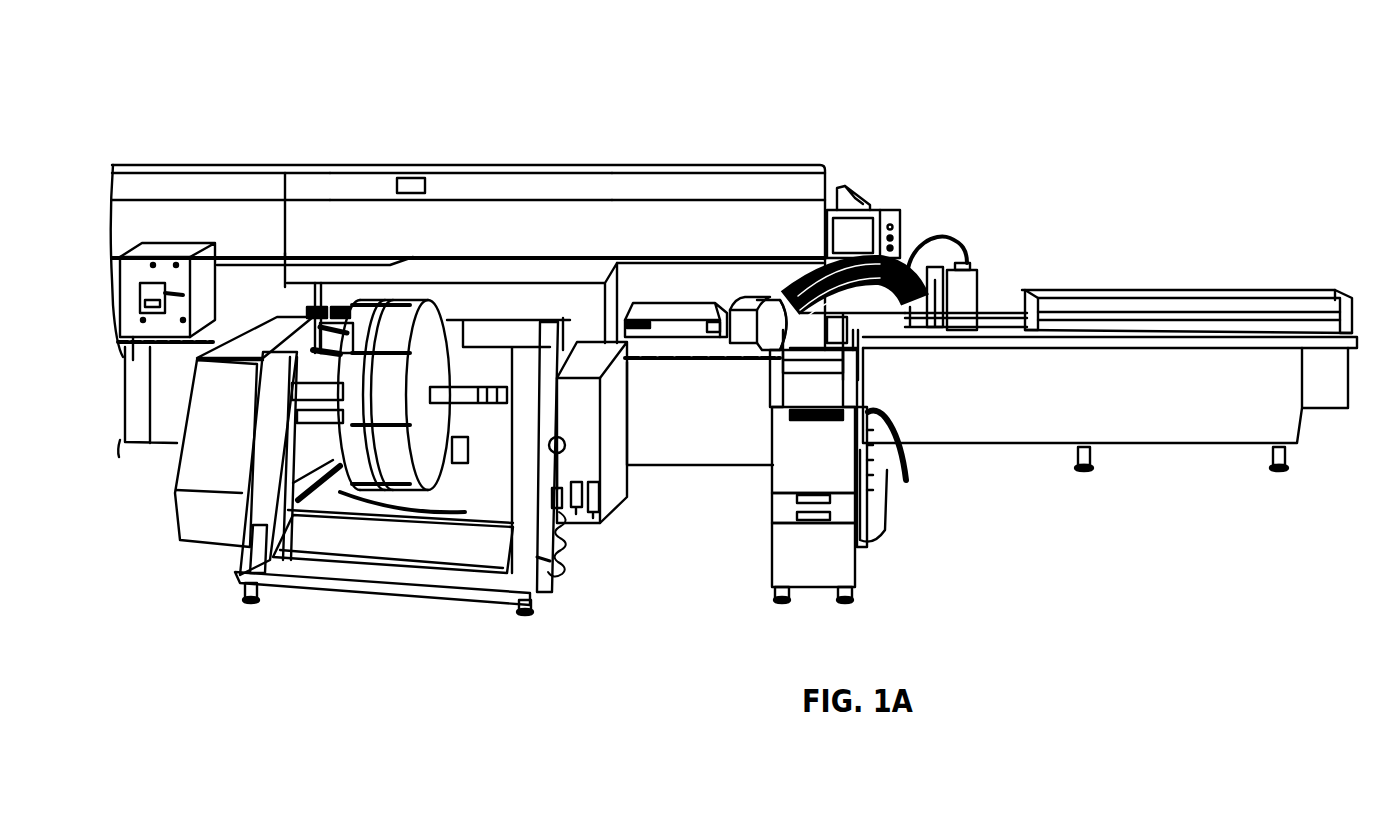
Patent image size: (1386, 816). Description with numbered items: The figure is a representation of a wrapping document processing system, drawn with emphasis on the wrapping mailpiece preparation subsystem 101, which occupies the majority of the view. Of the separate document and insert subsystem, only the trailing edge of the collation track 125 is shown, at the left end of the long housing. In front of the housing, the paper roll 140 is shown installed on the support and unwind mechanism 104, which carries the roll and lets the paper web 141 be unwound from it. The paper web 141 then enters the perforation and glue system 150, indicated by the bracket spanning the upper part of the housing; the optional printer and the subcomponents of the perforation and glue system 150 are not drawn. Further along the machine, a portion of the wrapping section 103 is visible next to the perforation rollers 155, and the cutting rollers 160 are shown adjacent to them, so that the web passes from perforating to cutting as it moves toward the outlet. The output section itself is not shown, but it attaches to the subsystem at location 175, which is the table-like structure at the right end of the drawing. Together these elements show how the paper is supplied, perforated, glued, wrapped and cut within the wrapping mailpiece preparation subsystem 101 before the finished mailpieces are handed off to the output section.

The wrapping mailpiece preparation subsystem 101 is at (768, 122).
The perforation and glue system 150 is at (613, 140).
The collation track 125 is at (150, 288).
The support and unwind mechanism 104 is at (210, 480).
The paper roll 140 is at (368, 498).
The paper web 141 is at (483, 456).
The wrapping section 103 is at (680, 323).
The perforation rollers 155 is at (743, 323).
The cutting rollers 160 is at (773, 337).
The location 175 is at (1247, 330).